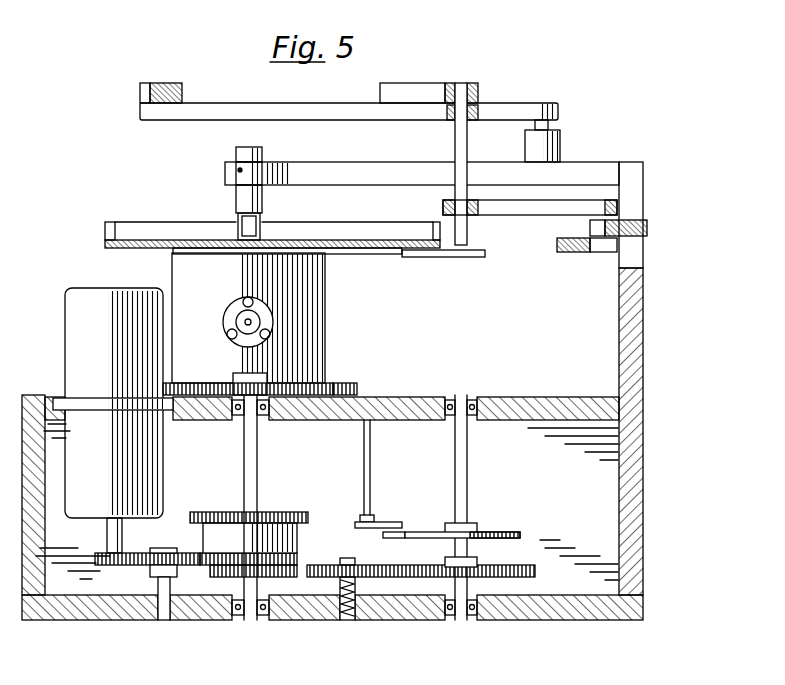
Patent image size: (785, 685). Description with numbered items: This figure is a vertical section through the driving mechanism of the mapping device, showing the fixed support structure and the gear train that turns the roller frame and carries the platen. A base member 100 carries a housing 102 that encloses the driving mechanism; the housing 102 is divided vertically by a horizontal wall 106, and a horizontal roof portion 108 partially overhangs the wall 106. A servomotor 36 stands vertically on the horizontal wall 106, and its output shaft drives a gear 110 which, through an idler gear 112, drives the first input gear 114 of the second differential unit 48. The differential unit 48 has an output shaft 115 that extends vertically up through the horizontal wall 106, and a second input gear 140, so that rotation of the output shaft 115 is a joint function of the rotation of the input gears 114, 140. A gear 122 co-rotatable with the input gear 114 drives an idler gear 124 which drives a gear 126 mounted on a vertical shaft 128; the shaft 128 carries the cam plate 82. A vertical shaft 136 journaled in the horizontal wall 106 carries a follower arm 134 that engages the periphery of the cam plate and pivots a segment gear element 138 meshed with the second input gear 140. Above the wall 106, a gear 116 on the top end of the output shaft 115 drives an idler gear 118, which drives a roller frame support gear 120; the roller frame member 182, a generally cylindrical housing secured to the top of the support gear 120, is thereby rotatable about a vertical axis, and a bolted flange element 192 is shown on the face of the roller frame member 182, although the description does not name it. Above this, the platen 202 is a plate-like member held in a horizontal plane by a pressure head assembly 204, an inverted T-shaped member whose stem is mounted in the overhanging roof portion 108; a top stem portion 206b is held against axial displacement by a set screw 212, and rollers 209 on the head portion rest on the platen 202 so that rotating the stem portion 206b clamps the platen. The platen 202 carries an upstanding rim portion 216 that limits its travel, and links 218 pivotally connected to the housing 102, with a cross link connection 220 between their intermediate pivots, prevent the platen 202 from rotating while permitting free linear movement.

The servomotor 36 is at (163, 446).
The second differential unit 48 is at (297, 540).
The cam plate 82 is at (510, 532).
The base member 100 is at (596, 620).
The housing 102 is at (630, 480).
The horizontal wall 106 is at (520, 400).
The horizontal roof portion 108 is at (586, 162).
The gear 110 is at (118, 565).
The idler gear 112 is at (180, 566).
The first input gear 114 is at (300, 578).
The output shaft 115 is at (243, 476).
The gear 116 is at (240, 378).
The idler gear 118 is at (292, 380).
The roller frame support gear 120 is at (356, 390).
The gear 122 is at (276, 600).
The idler gear 124 is at (358, 578).
The gear 126 is at (536, 572).
The vertical shaft 128 is at (460, 620).
The follower arm 134 is at (384, 524).
The vertical shaft 136 is at (370, 468).
The segment gear element 138 is at (352, 522).
The second input gear 140 is at (276, 512).
The roller frame member 182 is at (328, 298).
The bolt flange 192 is at (238, 310).
The platen 202 is at (396, 256).
The pressure head assembly 204 is at (266, 192).
The top stem portion 206b is at (236, 152).
The rollers 209 is at (268, 246).
The set screw 212 is at (238, 170).
The upstanding rim portion 216 is at (116, 222).
The links 218 is at (588, 228).
The cross link connection 220 is at (566, 252).